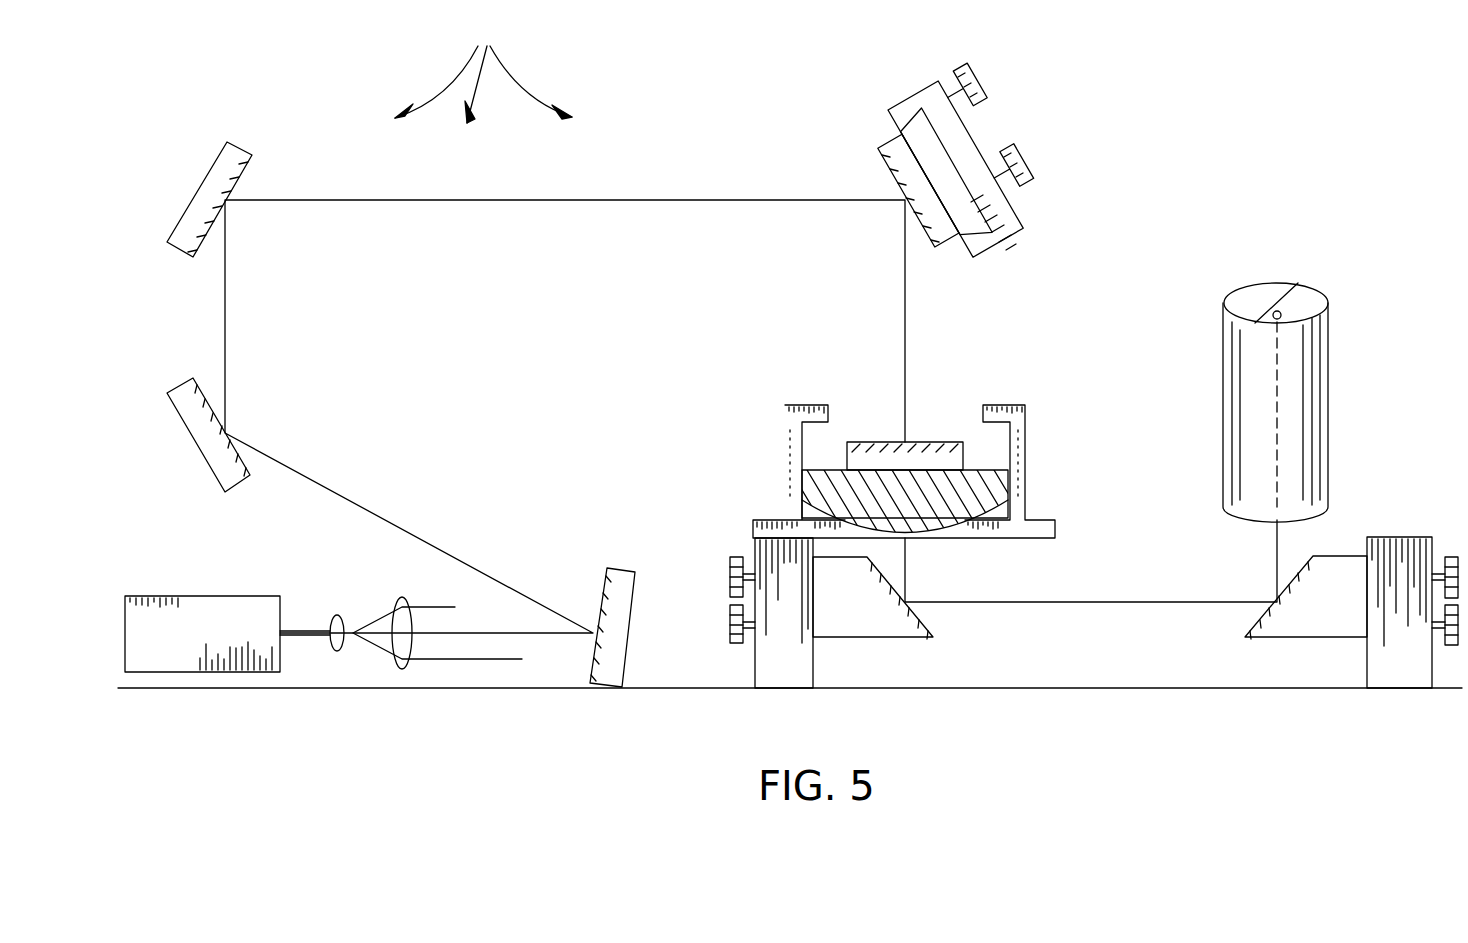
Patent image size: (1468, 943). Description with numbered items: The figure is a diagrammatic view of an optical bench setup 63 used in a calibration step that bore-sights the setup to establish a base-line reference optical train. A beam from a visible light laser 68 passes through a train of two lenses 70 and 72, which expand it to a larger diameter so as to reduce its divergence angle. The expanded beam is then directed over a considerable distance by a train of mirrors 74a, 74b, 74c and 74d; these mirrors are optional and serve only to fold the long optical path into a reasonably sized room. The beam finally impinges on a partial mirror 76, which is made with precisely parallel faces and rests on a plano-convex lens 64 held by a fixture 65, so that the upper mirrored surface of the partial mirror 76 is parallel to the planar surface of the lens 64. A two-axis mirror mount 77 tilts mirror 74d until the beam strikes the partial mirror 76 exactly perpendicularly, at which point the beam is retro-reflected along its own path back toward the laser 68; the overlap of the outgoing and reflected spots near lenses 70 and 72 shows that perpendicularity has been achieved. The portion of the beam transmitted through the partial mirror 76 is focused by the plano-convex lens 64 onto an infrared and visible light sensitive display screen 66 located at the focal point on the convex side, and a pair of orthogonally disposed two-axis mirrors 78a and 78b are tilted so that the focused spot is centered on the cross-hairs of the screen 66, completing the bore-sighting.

The optical bench setup 63 is at (483, 72).
The plano-convex lens 64 is at (992, 487).
The fixture 65 is at (1008, 405).
The display screen 66 is at (1328, 380).
The visible light laser 68 is at (227, 596).
The lens 70 is at (337, 615).
The lens 72 is at (402, 597).
The mirror 74a is at (635, 585).
The mirror 74b is at (198, 455).
The mirror 74c is at (198, 190).
The mirror 74d is at (880, 162).
The partial mirror 76 is at (883, 442).
The two-axis mirror mount 77 is at (1017, 210).
The two-axis mirror 78a is at (903, 637).
The two-axis mirror 78b is at (1292, 637).